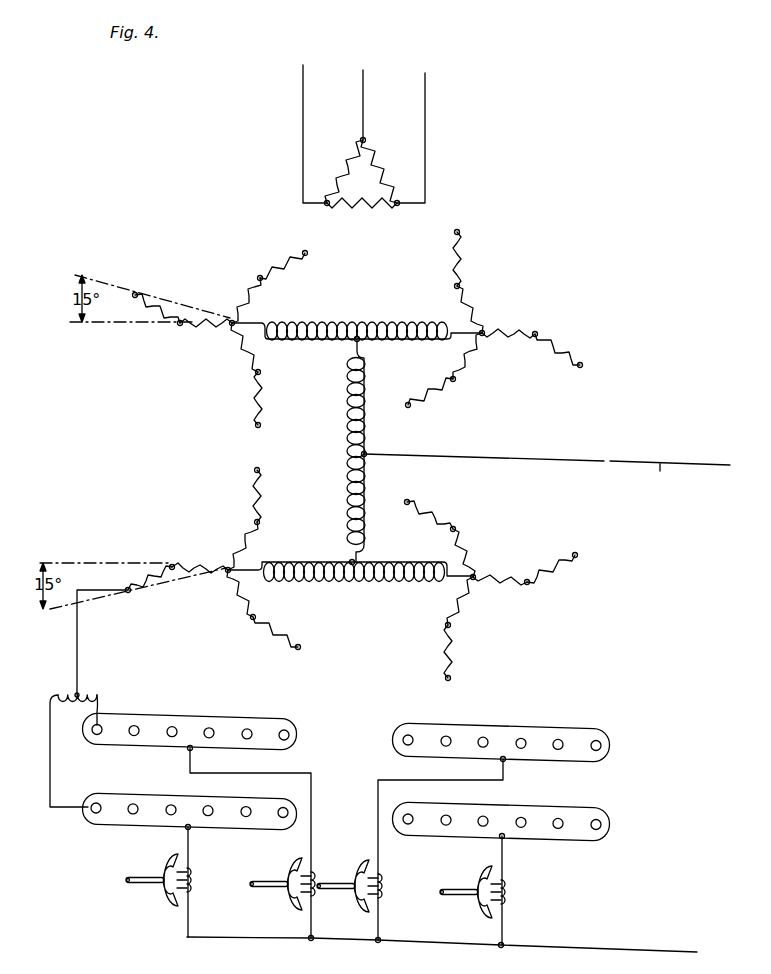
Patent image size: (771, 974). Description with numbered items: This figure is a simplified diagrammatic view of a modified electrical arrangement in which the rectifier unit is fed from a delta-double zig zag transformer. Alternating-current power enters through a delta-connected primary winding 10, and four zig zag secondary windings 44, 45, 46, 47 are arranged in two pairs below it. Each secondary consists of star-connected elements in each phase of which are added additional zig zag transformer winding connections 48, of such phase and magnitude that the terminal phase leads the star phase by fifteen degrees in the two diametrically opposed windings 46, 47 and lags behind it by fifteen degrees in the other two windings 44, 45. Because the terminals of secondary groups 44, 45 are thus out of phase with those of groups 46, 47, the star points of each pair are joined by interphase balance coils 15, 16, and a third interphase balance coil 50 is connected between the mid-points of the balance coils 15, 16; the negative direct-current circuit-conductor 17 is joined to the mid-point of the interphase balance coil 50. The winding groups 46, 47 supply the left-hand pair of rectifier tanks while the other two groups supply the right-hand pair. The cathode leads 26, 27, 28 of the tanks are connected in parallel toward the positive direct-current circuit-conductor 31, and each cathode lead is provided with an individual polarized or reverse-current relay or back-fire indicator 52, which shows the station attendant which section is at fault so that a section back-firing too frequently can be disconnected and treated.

The delta-connected primary winding 10 is at (388, 169).
The interphase balance coil 15 is at (352, 327).
The interphase balance coil 16 is at (313, 560).
The negative direct-current circuit-conductor 17 is at (547, 470).
The positive direct-current circuit-conductor 31 is at (577, 947).
The zig zag secondary winding 44 is at (228, 297).
The zig zag secondary winding 45 is at (520, 312).
The zig zag secondary winding 46 is at (217, 545).
The zig zag secondary winding 47 is at (512, 553).
The zig zag transformer winding connections 48 is at (149, 294).
The interphase balance coil 50 is at (366, 474).
The polarized relay or back-fire indicator 52 is at (152, 863).
The cathode lead 26 is at (189, 846).
The cathode lead 27 is at (312, 836).
The cathode lead 28 is at (380, 850).